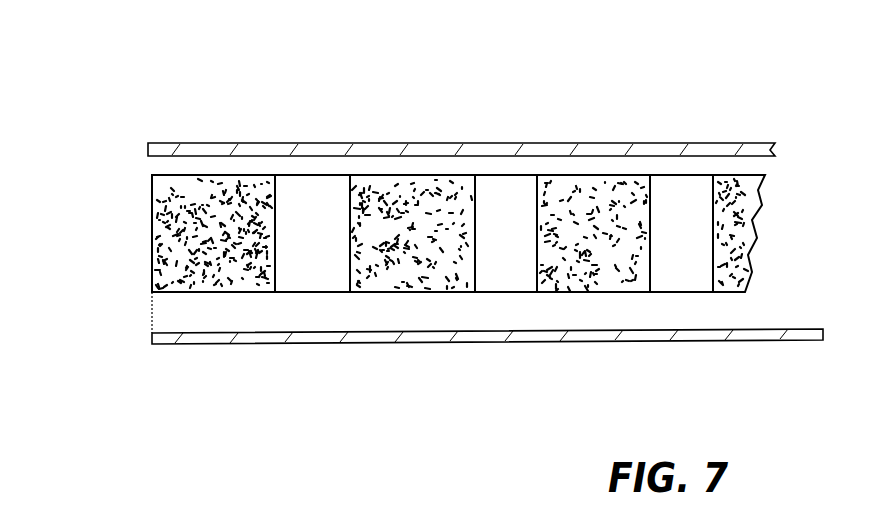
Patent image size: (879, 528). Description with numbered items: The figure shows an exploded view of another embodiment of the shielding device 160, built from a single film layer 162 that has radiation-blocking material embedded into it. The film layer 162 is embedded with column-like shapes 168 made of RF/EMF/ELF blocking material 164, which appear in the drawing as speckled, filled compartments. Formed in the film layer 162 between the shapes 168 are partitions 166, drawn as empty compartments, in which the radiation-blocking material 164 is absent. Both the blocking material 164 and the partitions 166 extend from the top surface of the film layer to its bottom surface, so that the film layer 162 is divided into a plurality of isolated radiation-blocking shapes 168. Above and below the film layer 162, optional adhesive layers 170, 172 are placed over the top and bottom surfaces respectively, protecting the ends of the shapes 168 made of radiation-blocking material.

The shielding device 160 is at (160, 112).
The film layer 162 is at (143, 204).
The RF/EMF/ELF blocking material 164 is at (217, 245).
The partitions 166 is at (305, 195).
The column-like shapes 168 is at (225, 192).
The adhesive layer 170 is at (147, 148).
The adhesive layer 172 is at (152, 338).